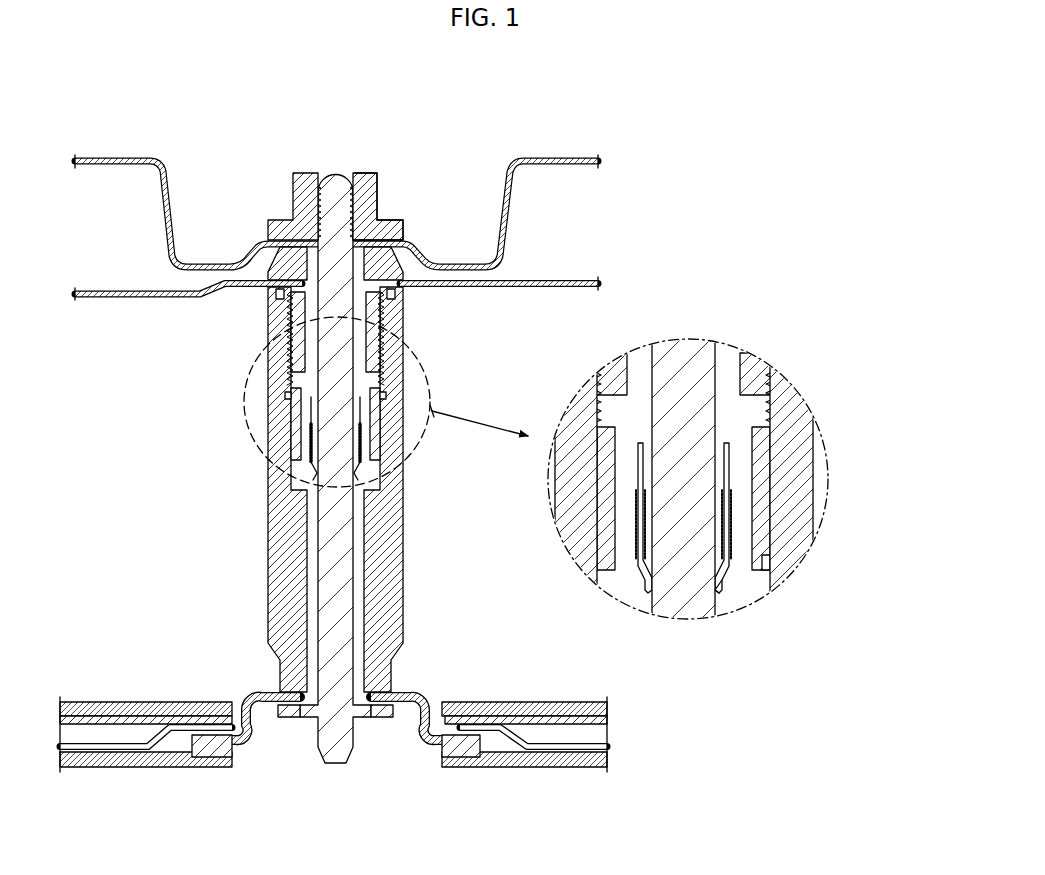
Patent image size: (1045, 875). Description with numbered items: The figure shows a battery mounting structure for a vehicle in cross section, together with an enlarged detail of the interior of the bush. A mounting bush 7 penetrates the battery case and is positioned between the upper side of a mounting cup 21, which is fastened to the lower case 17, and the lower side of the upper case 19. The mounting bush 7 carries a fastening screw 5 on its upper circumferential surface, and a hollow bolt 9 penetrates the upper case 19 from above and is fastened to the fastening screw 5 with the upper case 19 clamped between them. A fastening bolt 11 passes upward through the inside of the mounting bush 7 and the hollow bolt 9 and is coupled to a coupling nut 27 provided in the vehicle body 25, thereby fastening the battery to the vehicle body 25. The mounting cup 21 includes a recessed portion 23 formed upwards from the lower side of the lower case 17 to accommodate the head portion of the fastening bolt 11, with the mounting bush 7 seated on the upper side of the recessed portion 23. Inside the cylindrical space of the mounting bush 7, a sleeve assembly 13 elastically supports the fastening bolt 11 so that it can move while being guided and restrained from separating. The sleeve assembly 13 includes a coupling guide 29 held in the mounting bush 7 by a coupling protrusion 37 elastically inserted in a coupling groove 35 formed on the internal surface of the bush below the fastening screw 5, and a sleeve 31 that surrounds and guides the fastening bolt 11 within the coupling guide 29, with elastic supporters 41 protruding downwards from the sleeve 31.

The fastening screw 5 is at (400, 318).
The mounting bush 7 is at (270, 548).
The hollow bolt 9 is at (370, 242).
The fastening bolt 11 is at (330, 604).
The sleeve assembly 13 is at (300, 418).
The lower case 17 is at (512, 767).
The upper case 19 is at (572, 283).
The mounting cup 21 is at (423, 692).
The recessed portion 23 is at (399, 720).
The vehicle body 25 is at (122, 157).
The coupling nut 27 is at (304, 178).
The coupling guide 29 is at (764, 562).
The sleeve 31 is at (640, 474).
The coupling groove 35 is at (768, 420).
The coupling protrusion 37 is at (288, 394).
The elastic supporters 41 is at (731, 592).